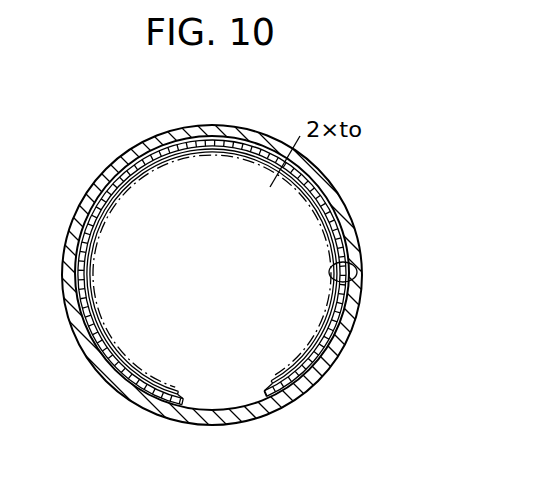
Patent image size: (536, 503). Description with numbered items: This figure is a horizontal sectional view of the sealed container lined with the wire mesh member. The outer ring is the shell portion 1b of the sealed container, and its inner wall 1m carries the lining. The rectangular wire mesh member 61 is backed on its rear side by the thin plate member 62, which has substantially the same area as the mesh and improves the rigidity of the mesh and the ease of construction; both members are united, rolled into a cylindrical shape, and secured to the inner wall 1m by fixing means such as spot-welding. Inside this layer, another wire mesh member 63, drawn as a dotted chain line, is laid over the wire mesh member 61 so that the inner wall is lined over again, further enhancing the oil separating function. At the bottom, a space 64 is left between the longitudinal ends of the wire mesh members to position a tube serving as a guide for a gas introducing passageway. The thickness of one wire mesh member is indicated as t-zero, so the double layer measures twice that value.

The shell portion 1b is at (328, 194).
The inner wall 1m is at (329, 272).
The wire mesh member 61 is at (110, 182).
The thin plate member 62 is at (207, 142).
The another wire mesh member 63 is at (88, 260).
The space 64 is at (237, 392).